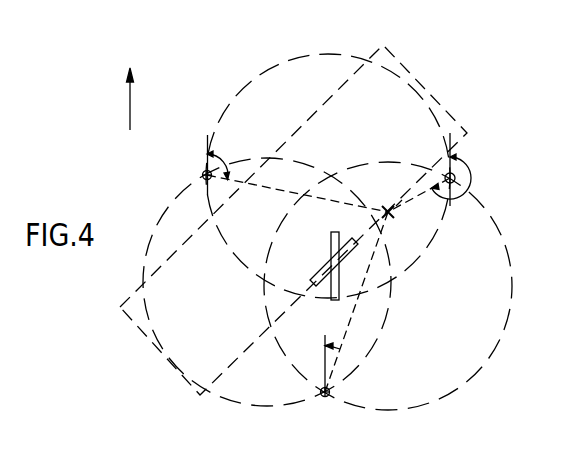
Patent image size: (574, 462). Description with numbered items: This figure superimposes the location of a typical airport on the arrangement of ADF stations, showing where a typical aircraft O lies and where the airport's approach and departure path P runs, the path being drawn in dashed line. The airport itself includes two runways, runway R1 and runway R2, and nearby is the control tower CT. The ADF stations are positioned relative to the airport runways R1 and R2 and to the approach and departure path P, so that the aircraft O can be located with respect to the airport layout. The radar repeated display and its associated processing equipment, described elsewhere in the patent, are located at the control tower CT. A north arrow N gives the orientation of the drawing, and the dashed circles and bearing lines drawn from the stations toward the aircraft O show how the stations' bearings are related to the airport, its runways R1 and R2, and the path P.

The aircraft O is at (386, 206).
The approach and departure path P is at (347, 84).
The runway R1 is at (331, 236).
The runway R2 is at (321, 287).
The control tower CT is at (335, 270).
The north direction arrow N is at (130, 87).